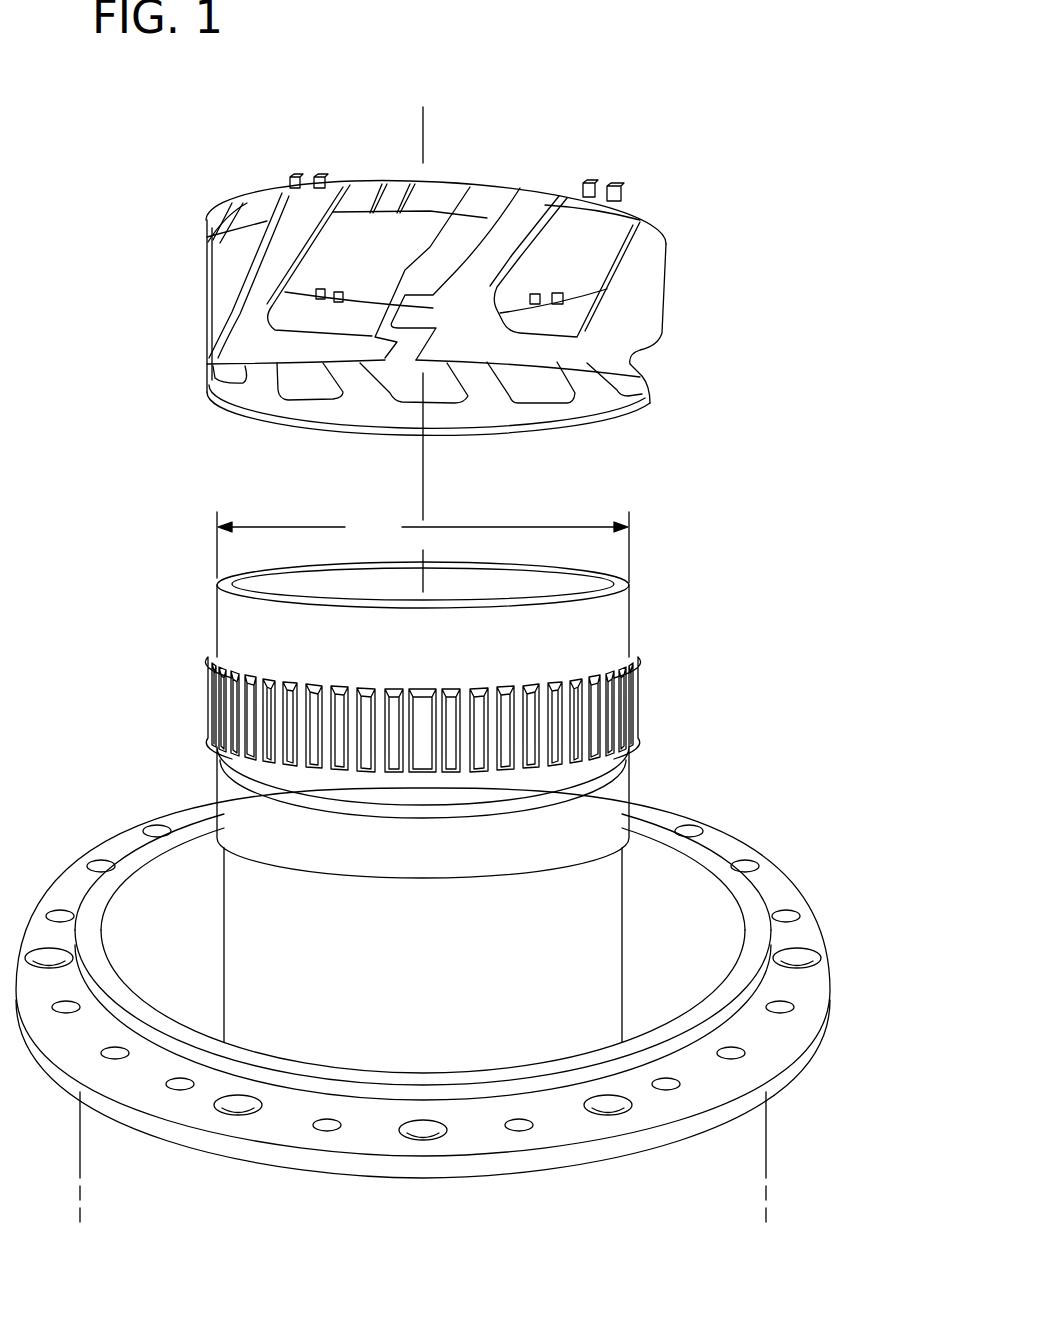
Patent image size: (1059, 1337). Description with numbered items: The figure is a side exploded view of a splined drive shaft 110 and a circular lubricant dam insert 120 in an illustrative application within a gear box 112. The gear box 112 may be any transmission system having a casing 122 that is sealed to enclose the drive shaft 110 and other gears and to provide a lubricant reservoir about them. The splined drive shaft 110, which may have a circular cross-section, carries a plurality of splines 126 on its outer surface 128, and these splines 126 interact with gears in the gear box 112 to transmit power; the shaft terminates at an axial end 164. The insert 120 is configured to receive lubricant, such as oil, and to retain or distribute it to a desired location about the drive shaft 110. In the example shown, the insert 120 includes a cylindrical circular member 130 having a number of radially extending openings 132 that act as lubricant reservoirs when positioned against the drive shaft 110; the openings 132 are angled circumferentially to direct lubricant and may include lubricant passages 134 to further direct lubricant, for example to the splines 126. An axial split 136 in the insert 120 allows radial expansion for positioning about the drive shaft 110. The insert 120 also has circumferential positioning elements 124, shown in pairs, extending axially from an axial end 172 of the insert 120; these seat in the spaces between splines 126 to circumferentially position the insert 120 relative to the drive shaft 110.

The splined drive shaft 110 is at (626, 645).
The gear box 112 is at (793, 1001).
The circular lubricant dam insert 120 is at (653, 393).
The casing 122 is at (775, 903).
The circumferential positioning element 124 is at (300, 177).
The splines 126 is at (243, 734).
The outer surface 128 is at (235, 628).
The circular member 130 is at (488, 198).
The radially extending openings 132 is at (376, 200).
The lubricant passages 134 is at (362, 193).
The axial split 136 is at (523, 203).
The axial end 164 is at (220, 584).
The axial end 172 is at (281, 194).